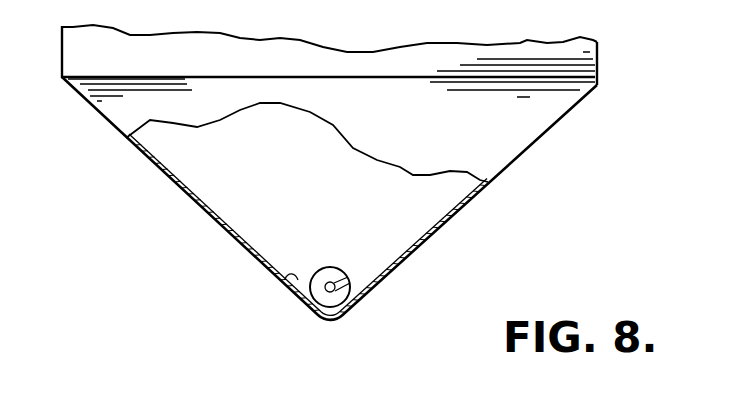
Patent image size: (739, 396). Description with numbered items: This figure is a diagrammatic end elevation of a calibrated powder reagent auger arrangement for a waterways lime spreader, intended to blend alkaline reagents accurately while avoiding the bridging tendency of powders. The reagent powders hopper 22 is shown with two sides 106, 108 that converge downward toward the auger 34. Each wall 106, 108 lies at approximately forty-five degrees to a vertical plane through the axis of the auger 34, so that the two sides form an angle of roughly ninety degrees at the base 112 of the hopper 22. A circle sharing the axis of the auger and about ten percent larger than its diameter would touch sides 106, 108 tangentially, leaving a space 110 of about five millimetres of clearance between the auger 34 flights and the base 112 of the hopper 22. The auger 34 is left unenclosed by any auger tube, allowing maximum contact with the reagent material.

The reagent powders hopper 22 is at (549, 127).
The auger 34 is at (333, 271).
The side 106 is at (202, 208).
The side 108 is at (450, 218).
The space 110 is at (285, 285).
The base 112 is at (350, 313).